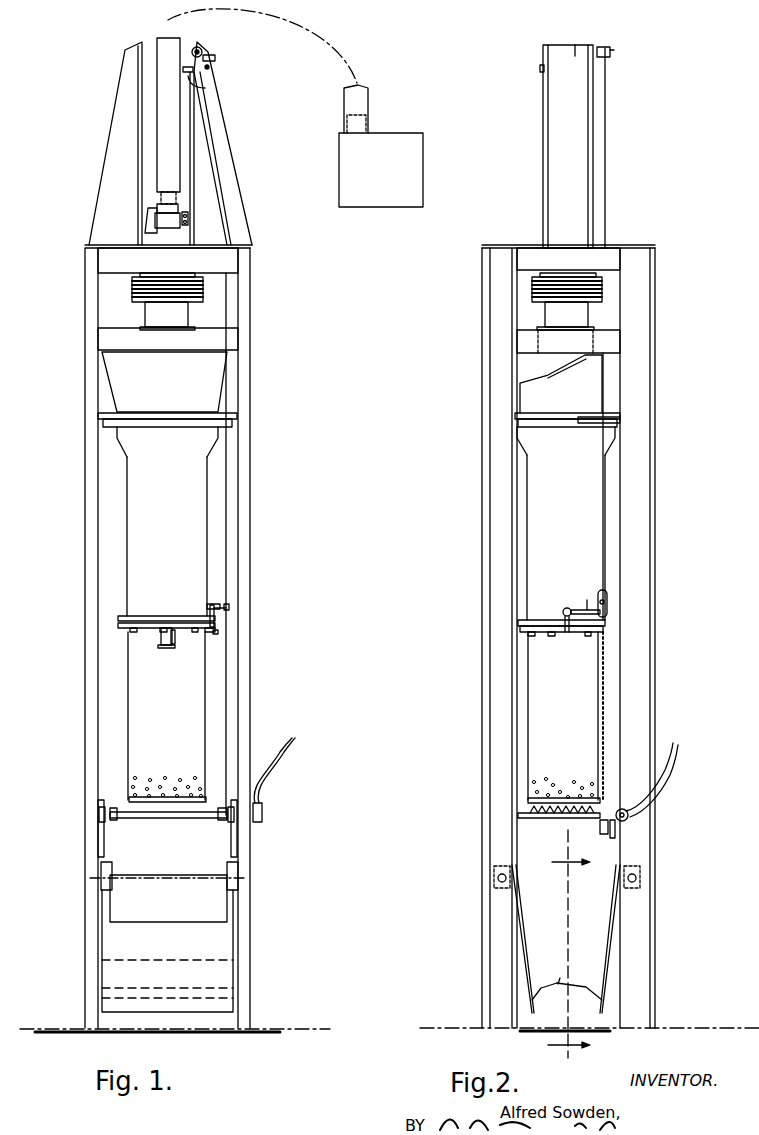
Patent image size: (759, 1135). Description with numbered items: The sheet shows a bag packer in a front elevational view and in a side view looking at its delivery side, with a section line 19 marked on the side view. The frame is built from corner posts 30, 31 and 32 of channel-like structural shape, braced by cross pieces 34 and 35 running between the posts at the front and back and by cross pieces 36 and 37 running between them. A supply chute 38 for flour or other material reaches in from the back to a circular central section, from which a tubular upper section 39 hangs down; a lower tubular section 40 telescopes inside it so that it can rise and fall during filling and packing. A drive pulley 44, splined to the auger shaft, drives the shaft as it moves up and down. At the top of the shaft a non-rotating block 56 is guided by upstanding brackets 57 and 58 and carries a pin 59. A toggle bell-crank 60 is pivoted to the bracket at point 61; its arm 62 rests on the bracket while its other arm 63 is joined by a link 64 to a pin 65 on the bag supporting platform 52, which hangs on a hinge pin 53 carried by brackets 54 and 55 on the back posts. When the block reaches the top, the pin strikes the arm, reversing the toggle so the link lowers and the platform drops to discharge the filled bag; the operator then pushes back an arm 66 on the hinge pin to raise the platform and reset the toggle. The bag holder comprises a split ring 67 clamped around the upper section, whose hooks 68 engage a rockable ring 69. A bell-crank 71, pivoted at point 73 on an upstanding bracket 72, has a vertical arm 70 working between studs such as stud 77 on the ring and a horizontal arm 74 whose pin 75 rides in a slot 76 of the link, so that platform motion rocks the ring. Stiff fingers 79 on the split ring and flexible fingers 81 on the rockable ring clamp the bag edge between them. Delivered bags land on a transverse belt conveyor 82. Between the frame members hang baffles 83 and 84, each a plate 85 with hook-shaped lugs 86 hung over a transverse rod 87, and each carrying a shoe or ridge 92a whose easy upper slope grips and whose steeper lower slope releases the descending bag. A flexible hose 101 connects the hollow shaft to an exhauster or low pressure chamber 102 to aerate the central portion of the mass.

In FIG. 2, the section line 19 is at (560, 946).
In FIG. 1, the corner post 30 is at (92, 555).
In FIG. 1, the corner post 31 is at (243, 537).
In FIG. 2, the corner post 31 is at (492, 544).
In FIG. 2, the corner post 32 is at (636, 544).
In FIG. 2, the cross piece 34 is at (608, 262).
In FIG. 2, the cross piece 35 is at (610, 345).
In FIG. 1, the cross piece 36 is at (218, 262).
In FIG. 1, the cross piece 37 is at (216, 343).
In FIG. 1, the supply chute 38 is at (196, 389).
In FIG. 2, the supply chute 38 is at (612, 394).
In FIG. 1, the tubular upper section 39 is at (186, 513).
In FIG. 2, the tubular upper section 39 is at (572, 519).
In FIG. 1, the lower tubular section 40 is at (180, 703).
In FIG. 2, the lower tubular section 40 is at (575, 704).
In FIG. 1, the drive pulley 44 is at (205, 291).
In FIG. 2, the drive pulley 44 is at (530, 291).
In FIG. 1, the bag supporting platform 52 is at (140, 820).
In FIG. 2, the bag supporting platform 52 is at (536, 830).
In FIG. 1, the hinge or pin 53 is at (263, 826).
In FIG. 2, the hinge or pin 53 is at (630, 818).
In FIG. 1, the bracket 54 is at (232, 840).
In FIG. 2, the bracket 54 is at (611, 838).
In FIG. 1, the bracket 55 is at (106, 843).
In FIG. 1, the block 56 is at (160, 238).
In FIG. 1, the upstanding bracket 57 is at (120, 148).
In FIG. 1, the upstanding bracket 58 is at (222, 144).
In FIG. 2, the upstanding bracket 58 is at (574, 177).
In FIG. 1, the pin 59 is at (189, 216).
In FIG. 1, the toggle bell-crank 60 is at (216, 58).
In FIG. 2, the toggle bell-crank 60 is at (599, 50).
In FIG. 1, the pivot point 61 is at (210, 68).
In FIG. 1, the bell-crank arm 62 is at (192, 84).
In FIG. 1, the bell-crank arm 63 is at (204, 51).
In FIG. 2, the bell-crank arm 63 is at (578, 52).
In FIG. 1, the link 64 is at (223, 187).
In FIG. 2, the link 64 is at (606, 155).
In FIG. 2, the pin 65 is at (594, 834).
In FIG. 1, the arm 66 is at (277, 773).
In FIG. 2, the arm 66 is at (672, 786).
In FIG. 1, the split ring 67 is at (152, 608).
In FIG. 2, the split ring 67 is at (520, 620).
In FIG. 1, the hooks 68 is at (132, 634).
In FIG. 2, the hooks 68 is at (527, 634).
In FIG. 1, the rotatable ring 69 is at (150, 636).
In FIG. 2, the rotatable ring 69 is at (544, 636).
In FIG. 1, the vertical arm 70 is at (216, 625).
In FIG. 2, the vertical arm 70 is at (567, 636).
In FIG. 2, the bell-crank 71 is at (567, 608).
In FIG. 1, the upstanding bracket 72 is at (207, 606).
In FIG. 2, the pivotal point 73 is at (562, 610).
In FIG. 2, the horizontal arm 74 is at (585, 600).
In FIG. 1, the pin 75 is at (229, 607).
In FIG. 2, the pin 75 is at (607, 609).
In FIG. 2, the slot 76 is at (607, 599).
In FIG. 1, the stud 77 is at (217, 633).
In FIG. 1, the stiff finger 79 is at (175, 641).
In FIG. 1, the flexible finger 81 is at (165, 648).
In FIG. 2, the flexible finger 81 is at (562, 785).
In FIG. 1, the belt conveyor 82 is at (118, 1033).
In FIG. 2, the belt conveyor 82 is at (612, 1033).
In FIG. 1, the baffle or dampener 83 is at (167, 951).
In FIG. 2, the baffle or dampener 83 is at (523, 963).
In FIG. 2, the baffle or dampener 84 is at (604, 962).
In FIG. 1, the plate 85 is at (146, 941).
In FIG. 2, the plate 85 is at (522, 934).
In FIG. 1, the hook-shaped lugs 86 is at (112, 867).
In FIG. 2, the hook-shaped lugs 86 is at (494, 886).
In FIG. 1, the rod 87 is at (158, 877).
In FIG. 2, the rod 87 is at (498, 876).
In FIG. 1, the shoe or ridge 92a is at (232, 988).
In FIG. 2, the shoe or ridge 92a is at (555, 971).
In FIG. 1, the hose 101 is at (165, 110).
In FIG. 1, the exhauster or low pressure chamber 102 is at (381, 146).